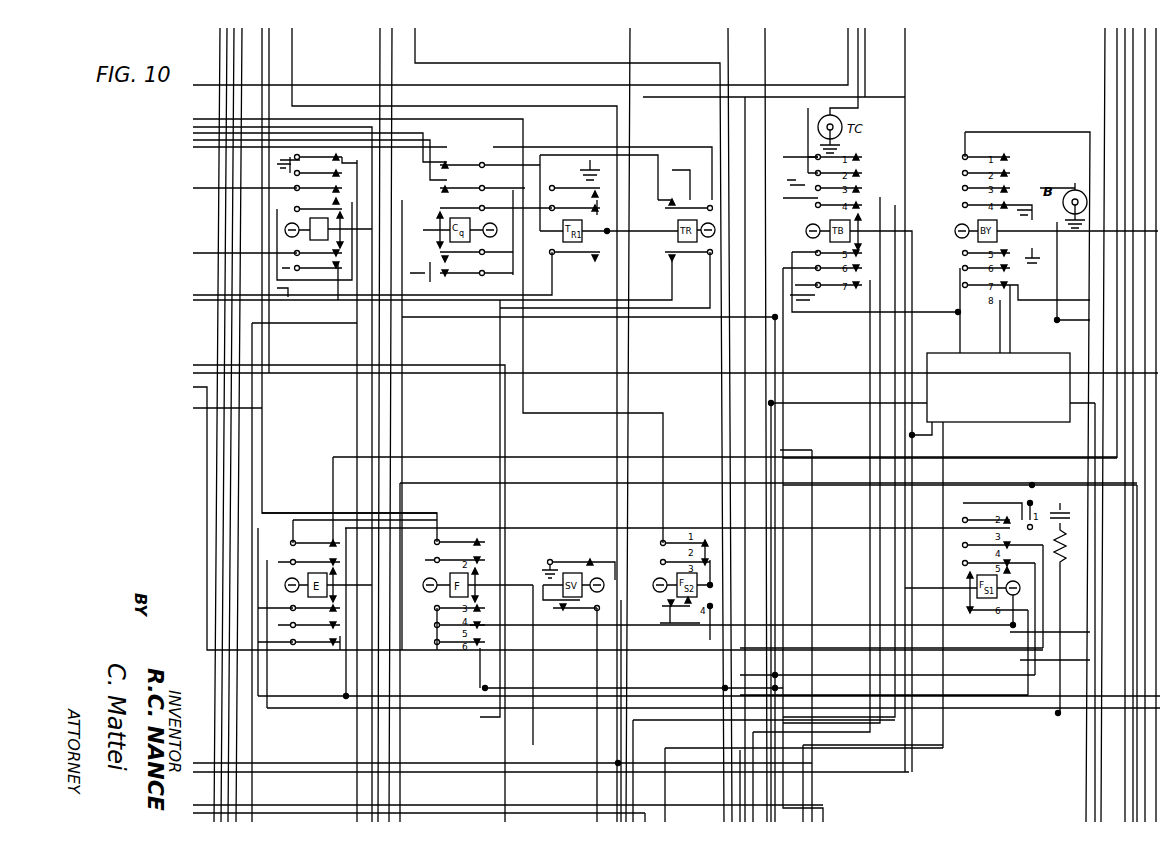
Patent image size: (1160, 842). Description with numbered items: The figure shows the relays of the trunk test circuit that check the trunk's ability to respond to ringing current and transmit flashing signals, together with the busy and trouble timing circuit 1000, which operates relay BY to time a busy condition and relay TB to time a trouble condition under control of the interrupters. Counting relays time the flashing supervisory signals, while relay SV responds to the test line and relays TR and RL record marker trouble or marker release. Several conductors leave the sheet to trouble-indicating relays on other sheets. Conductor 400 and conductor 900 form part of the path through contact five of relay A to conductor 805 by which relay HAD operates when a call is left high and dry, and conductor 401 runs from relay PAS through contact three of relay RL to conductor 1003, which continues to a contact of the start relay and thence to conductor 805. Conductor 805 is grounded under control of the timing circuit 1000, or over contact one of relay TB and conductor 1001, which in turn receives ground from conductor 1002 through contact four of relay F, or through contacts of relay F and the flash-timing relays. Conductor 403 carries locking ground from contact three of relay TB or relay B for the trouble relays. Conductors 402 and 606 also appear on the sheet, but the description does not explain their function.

The conductor 1003 is at (222, 182).
The conductor 401 is at (288, 290).
The conductor 400 is at (223, 388).
The conductor 900 is at (223, 410).
The conductor 1001 is at (781, 342).
The busy and trouble timing circuit 1000 is at (1005, 424).
The conductor 1002 is at (374, 733).
The conductor 402 is at (297, 804).
The conductor 606 is at (346, 811).
The conductor 403 is at (805, 789).
The conductor 805 is at (908, 766).